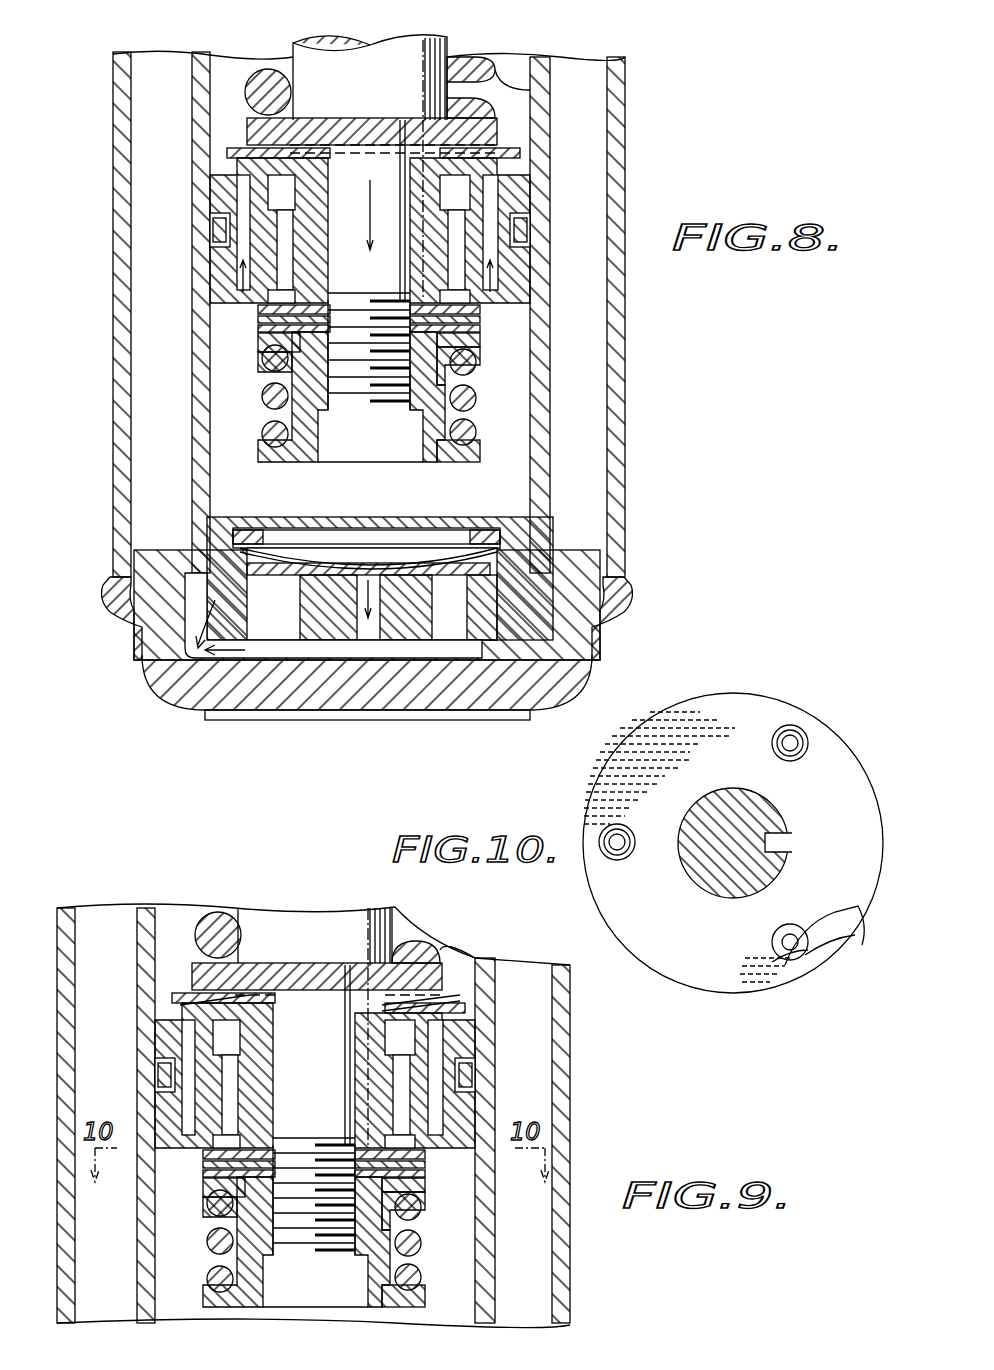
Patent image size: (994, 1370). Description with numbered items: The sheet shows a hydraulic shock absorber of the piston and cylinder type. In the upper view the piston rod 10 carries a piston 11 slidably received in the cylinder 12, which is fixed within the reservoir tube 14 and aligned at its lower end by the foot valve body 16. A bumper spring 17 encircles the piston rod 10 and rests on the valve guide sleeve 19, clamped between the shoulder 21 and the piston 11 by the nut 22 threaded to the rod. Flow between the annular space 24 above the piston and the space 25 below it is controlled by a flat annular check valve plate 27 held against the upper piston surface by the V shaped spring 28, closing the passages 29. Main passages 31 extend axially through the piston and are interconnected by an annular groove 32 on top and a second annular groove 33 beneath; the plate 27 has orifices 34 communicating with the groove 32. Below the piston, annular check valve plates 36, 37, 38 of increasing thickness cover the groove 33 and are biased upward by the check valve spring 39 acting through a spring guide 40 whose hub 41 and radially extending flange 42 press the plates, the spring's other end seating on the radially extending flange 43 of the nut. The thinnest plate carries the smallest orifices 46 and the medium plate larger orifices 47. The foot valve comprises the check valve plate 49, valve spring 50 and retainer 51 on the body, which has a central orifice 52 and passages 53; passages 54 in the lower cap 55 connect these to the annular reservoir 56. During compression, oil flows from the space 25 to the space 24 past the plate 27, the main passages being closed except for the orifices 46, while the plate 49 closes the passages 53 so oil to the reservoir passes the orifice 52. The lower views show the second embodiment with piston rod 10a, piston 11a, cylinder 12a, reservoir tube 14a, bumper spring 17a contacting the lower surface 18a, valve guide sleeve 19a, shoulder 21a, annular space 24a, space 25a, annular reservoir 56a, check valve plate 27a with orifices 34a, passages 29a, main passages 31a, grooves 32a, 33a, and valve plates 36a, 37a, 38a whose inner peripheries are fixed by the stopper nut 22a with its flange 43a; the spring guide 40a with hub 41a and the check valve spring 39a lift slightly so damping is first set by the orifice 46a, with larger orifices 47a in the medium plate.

In FIG. 8, the piston rod 10 is at (380, 50).
In FIG. 8, the piston 11 is at (525, 198).
In FIG. 8, the cylinder 12 is at (548, 212).
In FIG. 8, the reservoir tube 14 is at (625, 305).
In FIG. 8, the foot valve body 16 is at (545, 635).
In FIG. 8, the bumper spring 17 is at (470, 68).
In FIG. 8, the valve guide sleeve 19 is at (248, 110).
In FIG. 8, the shoulder 21 is at (378, 122).
In FIG. 8, the nut 22 is at (425, 464).
In FIG. 8, the annular space 24 is at (513, 62).
In FIG. 8, the space 25 is at (215, 486).
In FIG. 8, the check valve plate 27 is at (520, 153).
In FIG. 8, the V shaped spring 28 is at (500, 158).
In FIG. 8, the passages 29 is at (235, 250).
In FIG. 8, the main passages 31 is at (293, 232).
In FIG. 8, the annular groove 32 is at (300, 188).
In FIG. 8, the second annular groove 33 is at (297, 296).
In FIG. 8, the orifices 34 is at (245, 160).
In FIG. 8, the annular check valve plate 36 is at (485, 331).
In FIG. 8, the annular check valve plate 37 is at (485, 319).
In FIG. 8, the annular check valve plate 38 is at (485, 307).
In FIG. 8, the check valve spring 39 is at (478, 402).
In FIG. 8, the spring guide 40 is at (268, 390).
In FIG. 8, the hub 41 is at (472, 368).
In FIG. 8, the radially extending flange 42 is at (490, 342).
In FIG. 8, the radially extending flange 43 is at (480, 457).
In FIG. 8, the orifices 46 is at (266, 350).
In FIG. 8, the orifices 47 is at (262, 316).
In FIG. 8, the check valve plate 49 is at (318, 565).
In FIG. 8, the valve spring 50 is at (290, 558).
In FIG. 8, the retainer 51 is at (262, 530).
In FIG. 8, the central orifice 52 is at (372, 595).
In FIG. 8, the passages 53 is at (462, 565).
In FIG. 8, the passages 54 is at (193, 650).
In FIG. 8, the lower cap 55 is at (170, 690).
In FIG. 8, the annular reservoir 56 is at (131, 418).
In FIG. 10, the piston rod 10a is at (718, 800).
In FIG. 9, the piston rod 10a is at (315, 1001).
In FIG. 9, the piston 11a is at (357, 1075).
In FIG. 9, the cylinder 12a is at (517, 1140).
In FIG. 9, the reservoir tube 14a is at (599, 1144).
In FIG. 9, the bumper spring 17a is at (417, 927).
In FIG. 9, the lower surface 18a is at (465, 967).
In FIG. 9, the valve guide sleeve 19a is at (197, 931).
In FIG. 9, the shoulder 21a is at (318, 946).
In FIG. 9, the stopper nut 22a is at (296, 1222).
In FIG. 9, the annular space 24a is at (479, 924).
In FIG. 9, the space 25a is at (117, 1115).
In FIG. 9, the check valve plate 27a is at (472, 992).
In FIG. 9, the passages 29a is at (277, 1060).
In FIG. 9, the main passages 31a is at (316, 1095).
In FIG. 9, the annular groove 32a is at (314, 1035).
In FIG. 9, the second annular groove 33a is at (314, 1123).
In FIG. 9, the orifices 34a is at (181, 993).
In FIG. 10, the valve plate 36a is at (815, 962).
In FIG. 9, the valve plate 36a is at (379, 1202).
In FIG. 10, the valve plate 37a is at (843, 935).
In FIG. 9, the valve plate 37a is at (379, 1185).
In FIG. 10, the valve plate 38a is at (835, 745).
In FIG. 9, the valve plate 38a is at (379, 1169).
In FIG. 9, the check valve spring 39a is at (434, 1242).
In FIG. 9, the spring guide 40a is at (194, 1241).
In FIG. 9, the hub 41a is at (465, 1231).
In FIG. 9, the radially extending flange 43a is at (428, 1304).
In FIG. 10, the orifice 46a is at (800, 958).
In FIG. 9, the orifice 46a is at (196, 1208).
In FIG. 10, the orifices 47a is at (785, 955).
In FIG. 9, the orifices 47a is at (308, 1188).
In FIG. 9, the annular reservoir 56a is at (106, 1090).